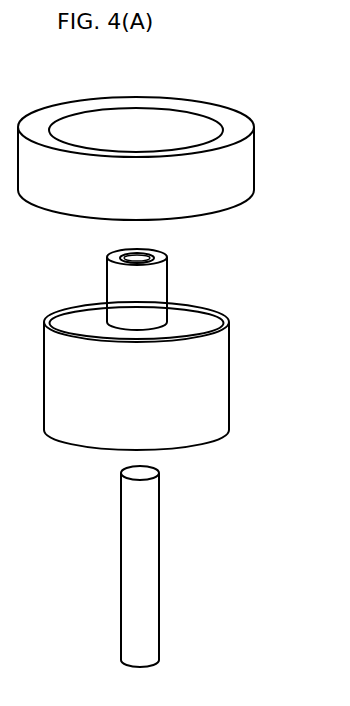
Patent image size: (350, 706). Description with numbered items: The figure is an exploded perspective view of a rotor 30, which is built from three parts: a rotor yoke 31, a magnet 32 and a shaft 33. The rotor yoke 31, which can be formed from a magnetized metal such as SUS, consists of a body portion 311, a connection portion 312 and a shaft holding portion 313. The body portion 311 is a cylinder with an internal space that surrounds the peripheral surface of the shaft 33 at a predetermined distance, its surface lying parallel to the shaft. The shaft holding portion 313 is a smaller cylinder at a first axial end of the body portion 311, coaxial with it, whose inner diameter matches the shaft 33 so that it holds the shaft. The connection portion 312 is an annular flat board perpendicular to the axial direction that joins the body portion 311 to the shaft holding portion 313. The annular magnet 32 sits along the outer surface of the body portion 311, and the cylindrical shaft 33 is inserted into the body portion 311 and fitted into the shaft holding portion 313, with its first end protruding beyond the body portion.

The rotor 30 is at (303, 91).
The rotor yoke 31 is at (262, 260).
The body portion 311 is at (213, 357).
The connection portion 312 is at (198, 315).
The shaft holding portion 313 is at (153, 293).
The magnet 32 is at (238, 166).
The shaft 33 is at (145, 567).